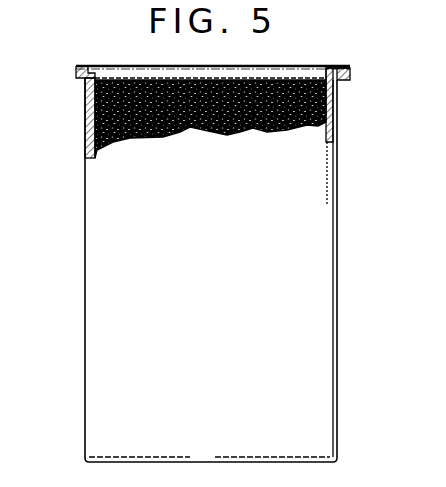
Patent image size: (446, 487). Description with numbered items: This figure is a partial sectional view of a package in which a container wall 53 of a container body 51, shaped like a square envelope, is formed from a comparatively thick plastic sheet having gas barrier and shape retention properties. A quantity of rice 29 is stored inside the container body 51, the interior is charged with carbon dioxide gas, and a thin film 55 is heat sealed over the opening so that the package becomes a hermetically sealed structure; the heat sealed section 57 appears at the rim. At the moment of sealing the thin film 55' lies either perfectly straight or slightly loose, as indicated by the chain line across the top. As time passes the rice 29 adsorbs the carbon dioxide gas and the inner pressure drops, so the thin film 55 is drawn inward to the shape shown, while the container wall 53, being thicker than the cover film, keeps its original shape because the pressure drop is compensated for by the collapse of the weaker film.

The container body 51 is at (338, 316).
The rice 29 is at (93, 116).
The thin film 55 is at (219, 96).
The thin film in applied form 55' is at (206, 50).
The heat sealed section 57 is at (339, 80).
The container wall 53 is at (332, 124).